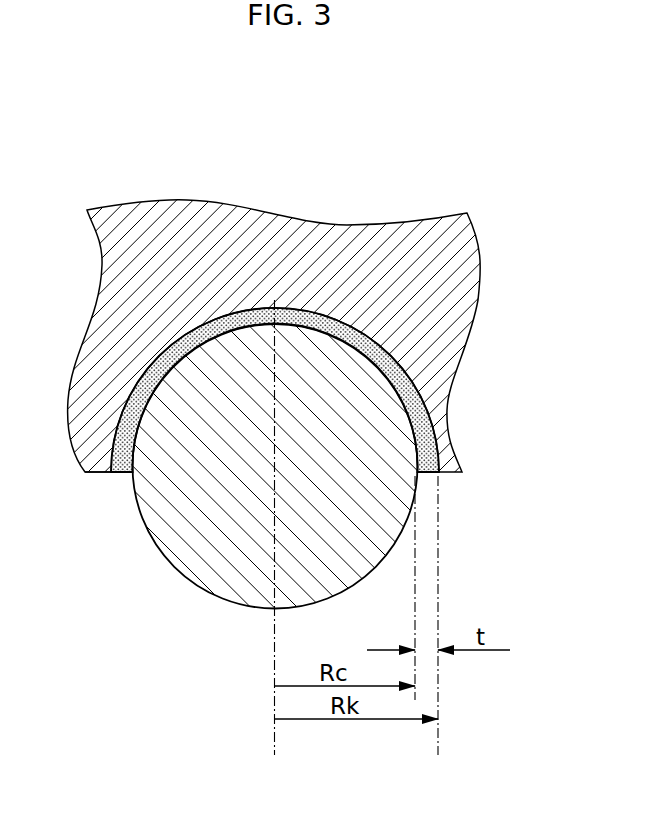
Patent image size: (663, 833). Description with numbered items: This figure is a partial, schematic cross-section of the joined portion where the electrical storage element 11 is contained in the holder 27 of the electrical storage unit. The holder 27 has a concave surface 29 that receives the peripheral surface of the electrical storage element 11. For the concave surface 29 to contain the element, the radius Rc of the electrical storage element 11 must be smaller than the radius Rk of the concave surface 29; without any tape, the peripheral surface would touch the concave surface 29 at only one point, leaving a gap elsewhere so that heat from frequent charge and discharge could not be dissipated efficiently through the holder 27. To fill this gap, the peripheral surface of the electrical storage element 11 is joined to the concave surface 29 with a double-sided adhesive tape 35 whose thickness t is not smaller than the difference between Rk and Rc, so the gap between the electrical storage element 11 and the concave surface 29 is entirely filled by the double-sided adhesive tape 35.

The electrical storage element 11 is at (205, 570).
The holder 27 is at (447, 310).
The concave surface 29 is at (430, 417).
The double-sided adhesive tape 35 is at (125, 472).